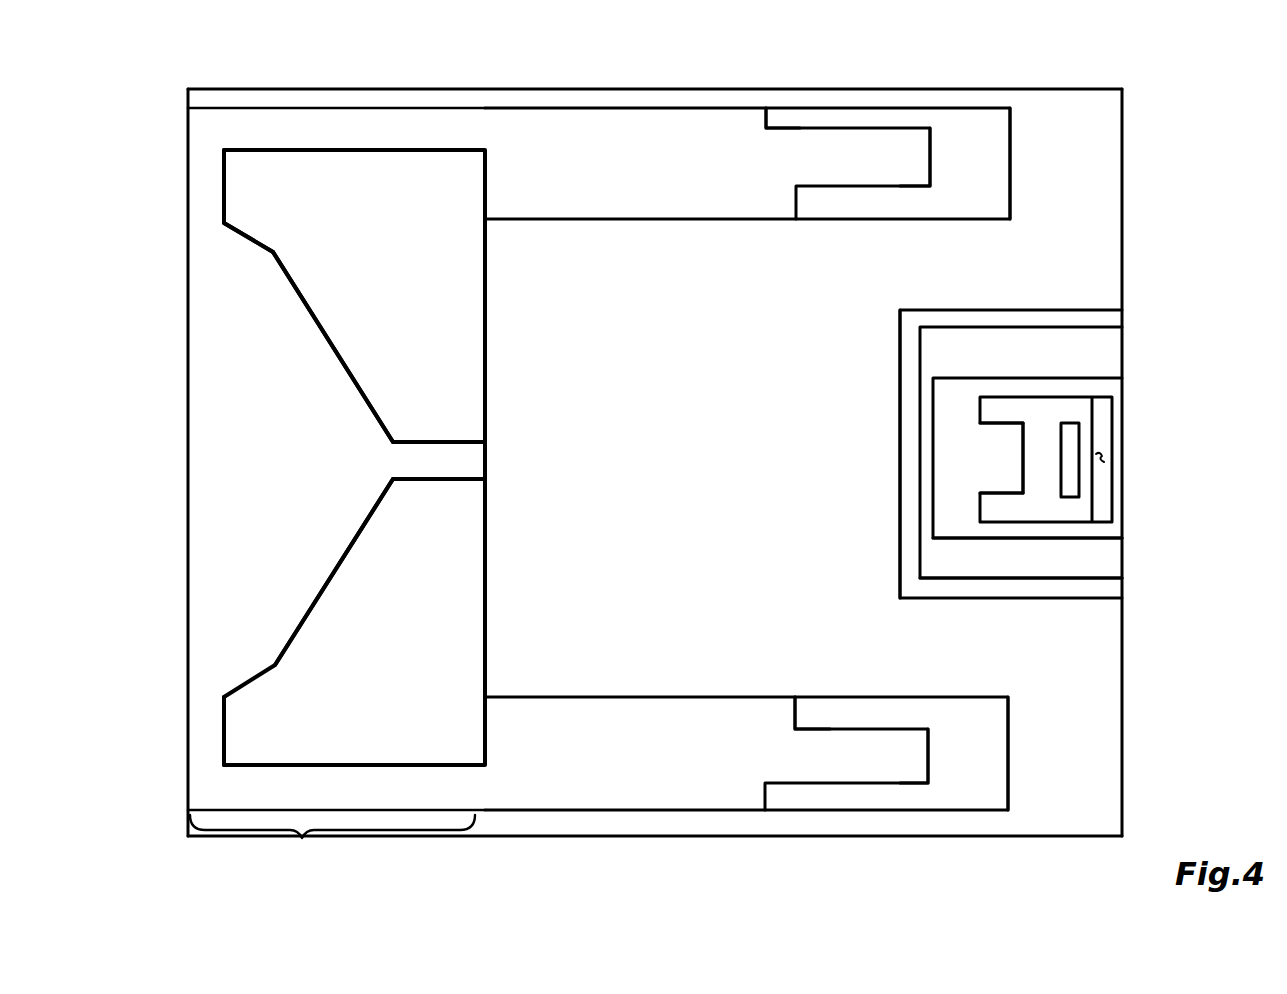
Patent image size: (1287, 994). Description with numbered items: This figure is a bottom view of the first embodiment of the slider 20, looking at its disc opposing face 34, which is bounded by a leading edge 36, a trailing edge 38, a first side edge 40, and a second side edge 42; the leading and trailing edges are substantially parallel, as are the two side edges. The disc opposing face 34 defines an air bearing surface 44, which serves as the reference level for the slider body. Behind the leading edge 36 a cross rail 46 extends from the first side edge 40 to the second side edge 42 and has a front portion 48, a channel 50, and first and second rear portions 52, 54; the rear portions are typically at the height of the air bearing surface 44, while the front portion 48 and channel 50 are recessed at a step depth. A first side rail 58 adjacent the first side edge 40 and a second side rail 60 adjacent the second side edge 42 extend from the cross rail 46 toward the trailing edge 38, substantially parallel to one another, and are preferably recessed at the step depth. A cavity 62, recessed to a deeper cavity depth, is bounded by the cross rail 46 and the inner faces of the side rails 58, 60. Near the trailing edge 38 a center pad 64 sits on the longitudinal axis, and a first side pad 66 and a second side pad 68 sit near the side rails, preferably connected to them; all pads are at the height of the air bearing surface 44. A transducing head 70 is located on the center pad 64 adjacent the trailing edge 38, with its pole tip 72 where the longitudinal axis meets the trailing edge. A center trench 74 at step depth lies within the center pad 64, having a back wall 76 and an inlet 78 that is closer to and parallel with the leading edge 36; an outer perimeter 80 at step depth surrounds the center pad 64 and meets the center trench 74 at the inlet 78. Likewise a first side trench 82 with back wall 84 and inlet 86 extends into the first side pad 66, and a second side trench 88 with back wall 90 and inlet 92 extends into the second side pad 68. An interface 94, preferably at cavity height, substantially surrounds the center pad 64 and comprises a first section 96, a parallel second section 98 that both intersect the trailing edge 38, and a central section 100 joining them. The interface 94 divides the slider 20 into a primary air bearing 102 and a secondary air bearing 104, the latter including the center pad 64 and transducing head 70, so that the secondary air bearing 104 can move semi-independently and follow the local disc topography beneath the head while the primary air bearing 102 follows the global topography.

The slider 20 is at (1212, 125).
The disc opposing face 34 is at (398, 519).
The leading edge 36 is at (186, 512).
The trailing edge 38 is at (1121, 625).
The first side edge 40 is at (462, 89).
The second side edge 42 is at (513, 843).
The air bearing surface 44 is at (417, 565).
The cross rail 46 is at (302, 838).
The front portion 48 is at (288, 326).
The channel 50 is at (443, 467).
The first rear portion 52 is at (423, 342).
The second rear portion 54 is at (427, 627).
The first side rail 58 is at (779, 196).
The second side rail 60 is at (777, 724).
The cavity 62 is at (600, 655).
The center pad 64 is at (1002, 486).
The first side pad 66 is at (985, 168).
The second side pad 68 is at (968, 762).
The transducing head 70 is at (1002, 430).
The pole tip 72 is at (1105, 458).
The center trench 74 is at (1010, 457).
The back wall 76 is at (1023, 432).
The inlet 78 is at (980, 470).
The outer perimeter 80 is at (1013, 540).
The first side trench 82 is at (864, 196).
The back wall 84 is at (930, 170).
The inlet 86 is at (796, 157).
The second side trench 88 is at (884, 724).
The back wall 90 is at (930, 747).
The inlet 92 is at (780, 750).
The interface 94 is at (985, 456).
The first section 96 is at (1002, 456).
The second section 98 is at (975, 590).
The central section 100 is at (900, 452).
The primary air bearing 102 is at (1022, 655).
The secondary air bearing 104 is at (1083, 355).